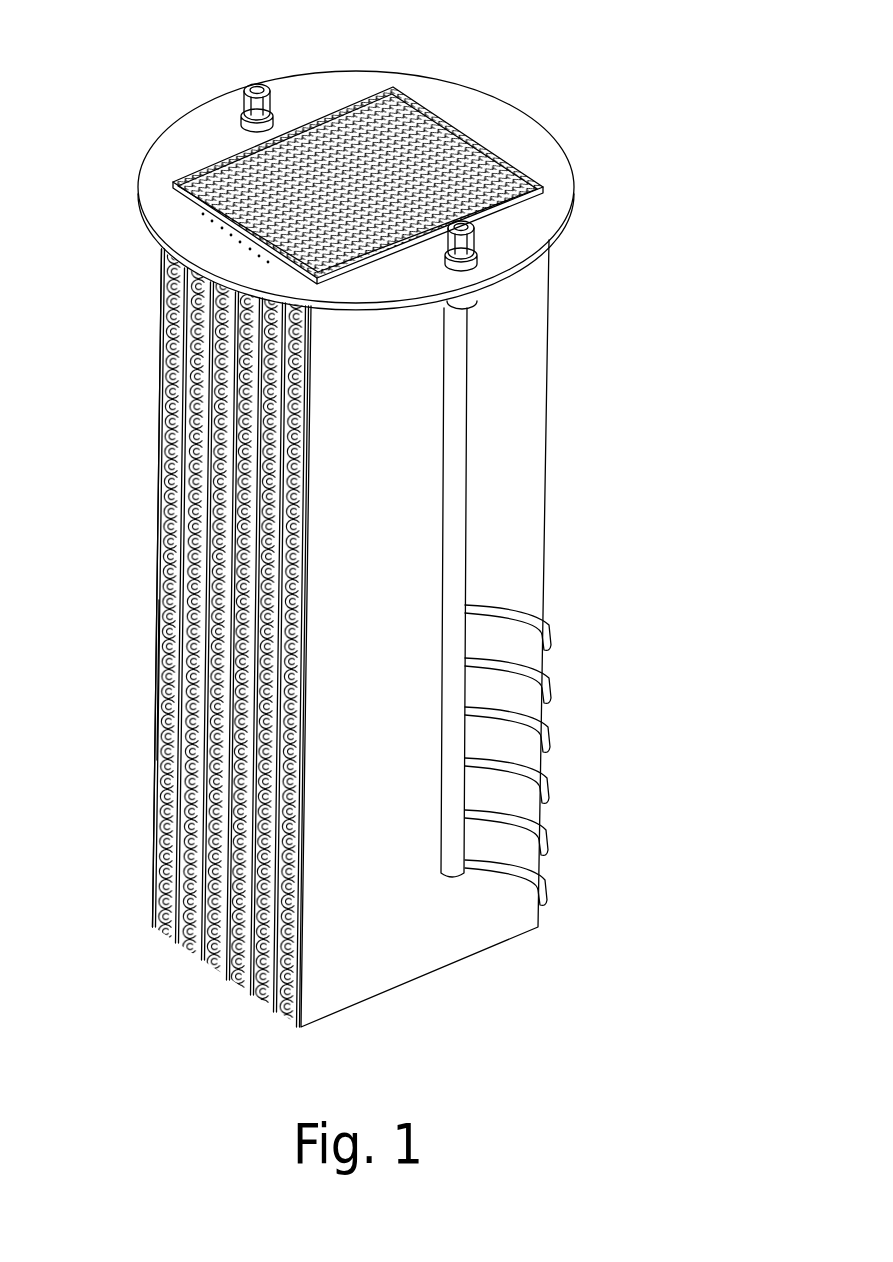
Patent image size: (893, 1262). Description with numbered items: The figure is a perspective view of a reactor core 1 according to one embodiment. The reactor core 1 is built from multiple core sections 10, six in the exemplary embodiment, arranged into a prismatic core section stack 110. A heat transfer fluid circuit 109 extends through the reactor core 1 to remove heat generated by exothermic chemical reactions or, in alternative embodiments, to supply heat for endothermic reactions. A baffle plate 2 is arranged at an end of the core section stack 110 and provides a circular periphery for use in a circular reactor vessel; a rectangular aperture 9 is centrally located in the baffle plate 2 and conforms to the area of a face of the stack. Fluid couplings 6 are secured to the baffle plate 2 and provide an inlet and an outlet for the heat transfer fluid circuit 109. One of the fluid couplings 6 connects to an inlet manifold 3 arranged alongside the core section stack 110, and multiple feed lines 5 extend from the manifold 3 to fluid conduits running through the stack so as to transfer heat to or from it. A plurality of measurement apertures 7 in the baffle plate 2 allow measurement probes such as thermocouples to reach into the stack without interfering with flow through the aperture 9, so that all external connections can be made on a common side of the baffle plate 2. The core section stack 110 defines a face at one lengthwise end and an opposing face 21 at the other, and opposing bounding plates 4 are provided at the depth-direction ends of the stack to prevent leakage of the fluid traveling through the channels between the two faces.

The reactor core 1 is at (672, 212).
The baffle plate 2 is at (503, 130).
The inlet manifold 3 is at (458, 430).
The bounding plates 4 is at (338, 985).
The feed lines 5 is at (559, 628).
The fluid couplings 6 is at (243, 84).
The measurement apertures 7 is at (196, 214).
The rectangular aperture 9 is at (427, 115).
The core sections 10 is at (180, 943).
The opposing face 21 is at (238, 195).
The heat transfer fluid circuit 109 is at (158, 566).
The core section stack 110 is at (142, 685).